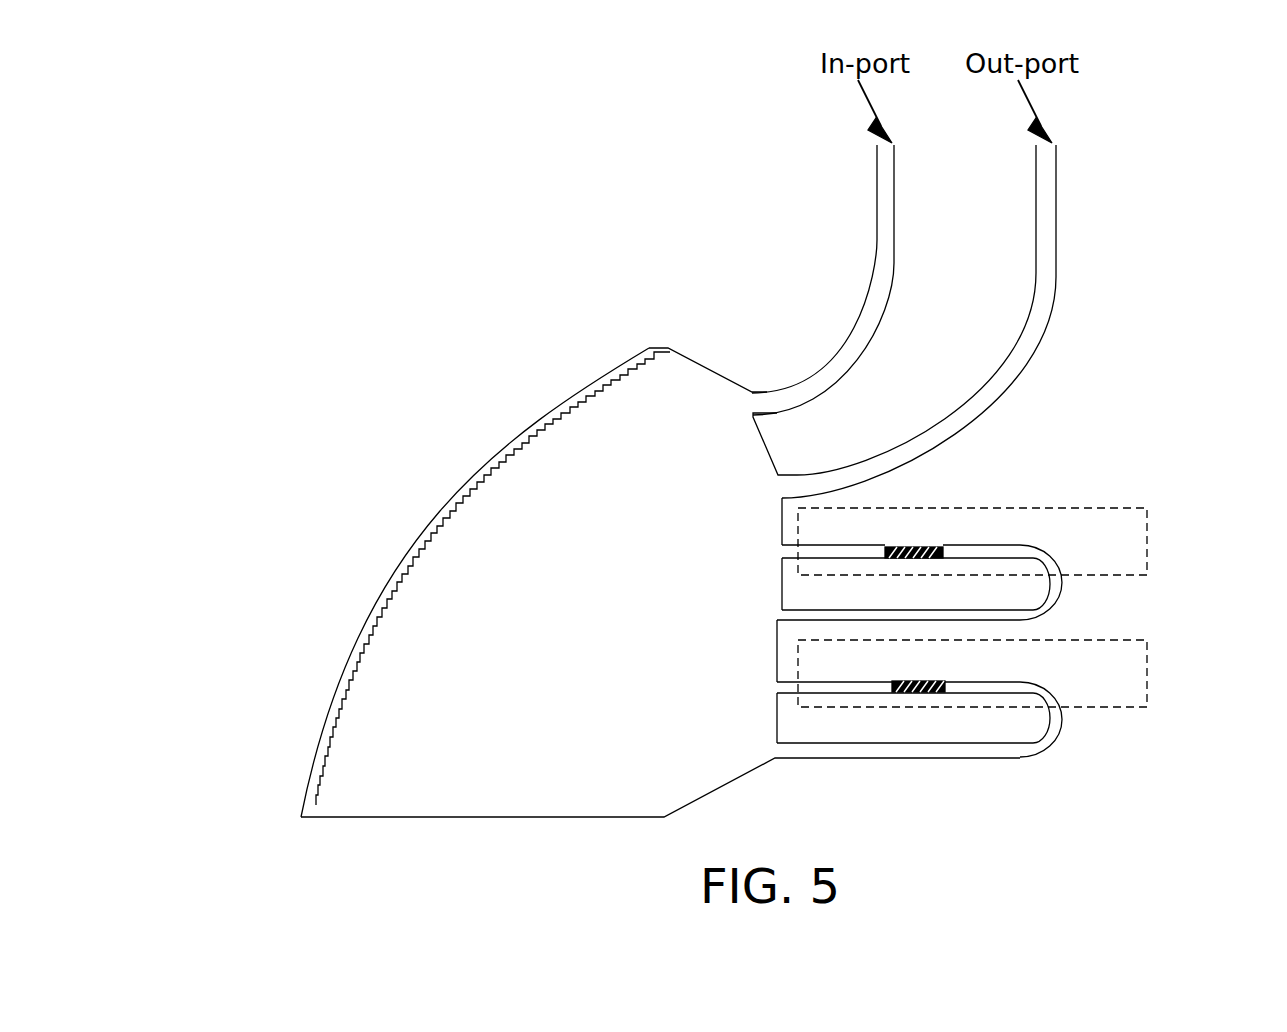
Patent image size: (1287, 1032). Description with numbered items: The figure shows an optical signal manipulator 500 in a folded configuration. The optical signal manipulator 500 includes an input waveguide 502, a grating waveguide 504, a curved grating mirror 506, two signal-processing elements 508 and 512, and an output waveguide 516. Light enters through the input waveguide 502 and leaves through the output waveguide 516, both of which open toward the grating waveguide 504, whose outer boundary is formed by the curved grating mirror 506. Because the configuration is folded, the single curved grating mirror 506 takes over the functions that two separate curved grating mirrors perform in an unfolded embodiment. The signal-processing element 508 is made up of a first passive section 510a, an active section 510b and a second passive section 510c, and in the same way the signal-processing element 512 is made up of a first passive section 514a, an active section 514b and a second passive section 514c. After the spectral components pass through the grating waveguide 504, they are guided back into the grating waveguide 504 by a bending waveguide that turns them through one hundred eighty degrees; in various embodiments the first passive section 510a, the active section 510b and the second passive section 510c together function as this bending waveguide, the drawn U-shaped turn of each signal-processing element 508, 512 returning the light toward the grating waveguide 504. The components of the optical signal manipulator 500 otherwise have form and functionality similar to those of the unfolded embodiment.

The optical signal manipulator 500 is at (282, 132).
The input waveguide 502 is at (863, 312).
The grating waveguide 504 is at (634, 624).
The curved grating mirror 506 is at (456, 502).
The signal-processing element 508 is at (1004, 564).
The first passive section 510a is at (815, 543).
The active section 510b is at (923, 543).
The second passive section 510c is at (1040, 545).
The signal-processing element 512 is at (1008, 698).
The first passive section 514a is at (815, 680).
The active section 514b is at (923, 680).
The second passive section 514c is at (1040, 682).
The output waveguide 516 is at (1049, 312).